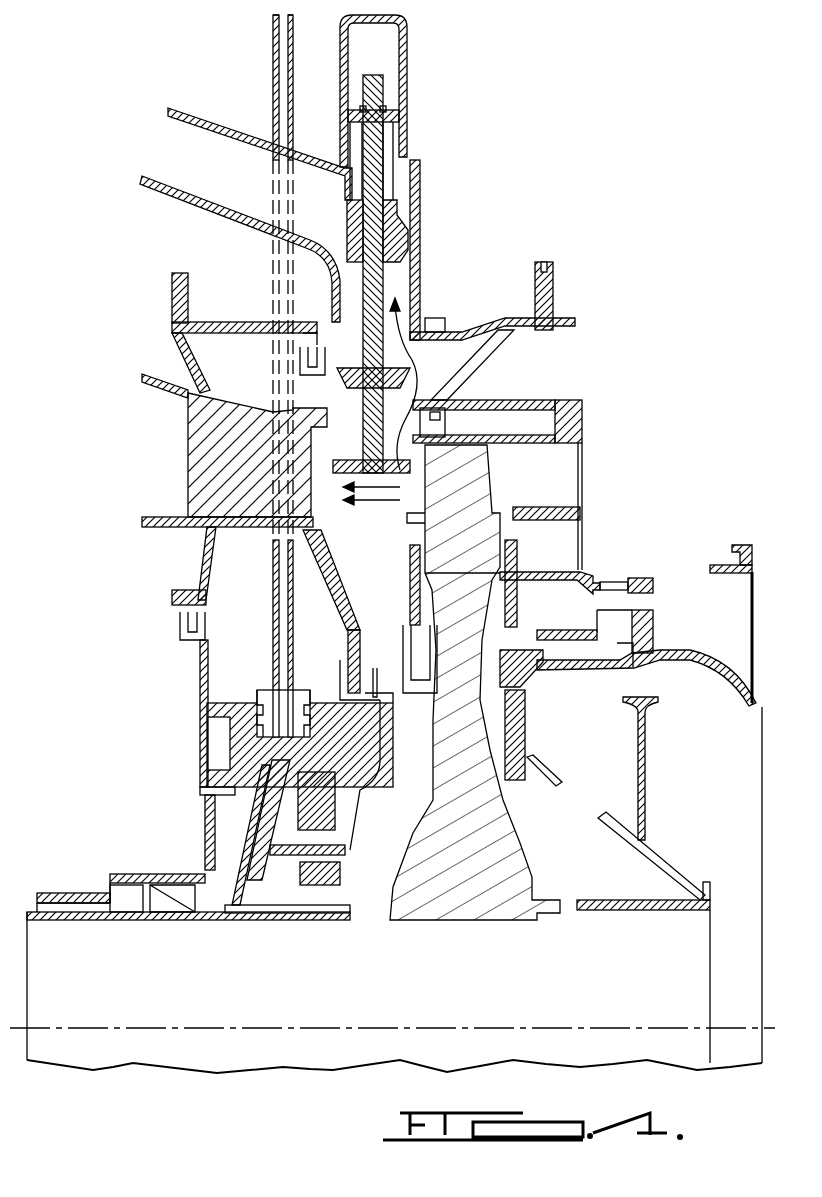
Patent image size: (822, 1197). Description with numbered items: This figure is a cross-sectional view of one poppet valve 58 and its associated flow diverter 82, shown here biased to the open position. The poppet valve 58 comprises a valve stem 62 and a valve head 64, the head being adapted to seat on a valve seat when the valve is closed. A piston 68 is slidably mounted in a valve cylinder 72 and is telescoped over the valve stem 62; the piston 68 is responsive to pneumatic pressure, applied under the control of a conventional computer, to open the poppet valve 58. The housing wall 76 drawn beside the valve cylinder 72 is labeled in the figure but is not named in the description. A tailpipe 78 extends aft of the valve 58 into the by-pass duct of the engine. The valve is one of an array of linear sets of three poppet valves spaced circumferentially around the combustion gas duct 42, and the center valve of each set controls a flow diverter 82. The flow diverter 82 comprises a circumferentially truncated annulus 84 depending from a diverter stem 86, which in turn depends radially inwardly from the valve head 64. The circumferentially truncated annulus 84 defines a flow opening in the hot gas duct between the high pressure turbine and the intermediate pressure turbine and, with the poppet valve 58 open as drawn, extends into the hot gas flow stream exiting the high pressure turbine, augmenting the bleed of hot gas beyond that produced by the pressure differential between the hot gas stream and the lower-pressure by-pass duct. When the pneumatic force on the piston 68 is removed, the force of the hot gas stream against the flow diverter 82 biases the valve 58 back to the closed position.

The combustion gas duct 42 is at (398, 512).
The poppet valve 58 is at (383, 38).
The valve stem 62 is at (385, 130).
The valve head 64 is at (350, 372).
The piston 68 is at (400, 95).
The valve cylinder 72 is at (355, 57).
The housing wall 76 is at (410, 138).
The tailpipe 78 is at (185, 110).
The flow diverter 82 is at (357, 457).
The circumferentially truncated annulus 84 is at (276, 537).
The diverter stem 86 is at (472, 365).